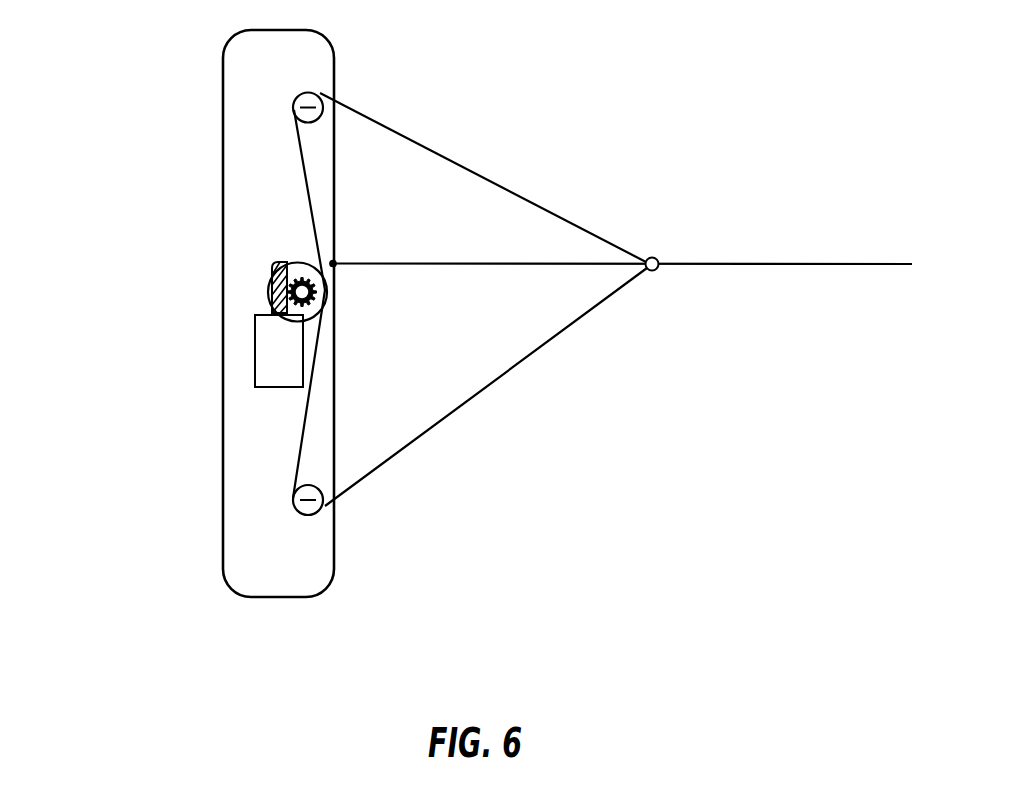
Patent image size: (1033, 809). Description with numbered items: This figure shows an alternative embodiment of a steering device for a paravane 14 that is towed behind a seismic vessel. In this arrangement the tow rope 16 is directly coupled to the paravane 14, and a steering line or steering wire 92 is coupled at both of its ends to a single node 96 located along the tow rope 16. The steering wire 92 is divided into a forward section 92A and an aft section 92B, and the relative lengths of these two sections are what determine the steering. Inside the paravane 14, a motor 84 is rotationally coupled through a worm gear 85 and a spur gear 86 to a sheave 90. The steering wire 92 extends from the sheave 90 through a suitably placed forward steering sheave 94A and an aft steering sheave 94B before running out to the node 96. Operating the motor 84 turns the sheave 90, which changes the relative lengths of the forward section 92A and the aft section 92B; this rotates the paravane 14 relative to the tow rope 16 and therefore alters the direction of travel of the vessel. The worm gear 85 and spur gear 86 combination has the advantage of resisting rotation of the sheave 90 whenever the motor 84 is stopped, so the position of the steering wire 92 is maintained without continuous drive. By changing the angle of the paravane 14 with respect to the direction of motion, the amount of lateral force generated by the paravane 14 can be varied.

The paravane 14 is at (147, 627).
The tow rope 16 is at (820, 263).
The motor 84 is at (256, 348).
The worm gear 85 is at (268, 293).
The spur gear 86 is at (318, 292).
The sheave 90 is at (296, 263).
The steering wire 92 is at (318, 198).
The forward section 92A is at (477, 168).
The aft section 92B is at (477, 397).
The forward steering sheave 94A is at (334, 100).
The aft steering sheave 94B is at (302, 502).
The node 96 is at (660, 268).